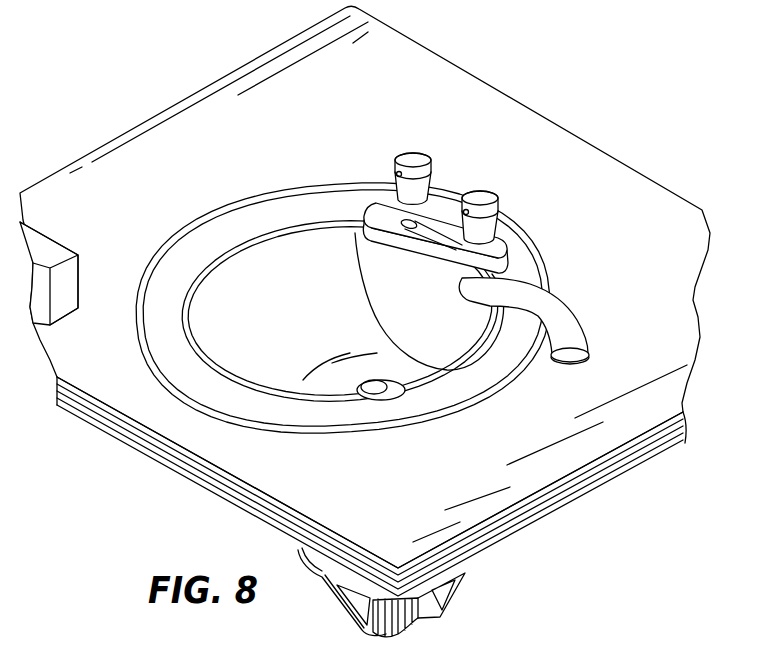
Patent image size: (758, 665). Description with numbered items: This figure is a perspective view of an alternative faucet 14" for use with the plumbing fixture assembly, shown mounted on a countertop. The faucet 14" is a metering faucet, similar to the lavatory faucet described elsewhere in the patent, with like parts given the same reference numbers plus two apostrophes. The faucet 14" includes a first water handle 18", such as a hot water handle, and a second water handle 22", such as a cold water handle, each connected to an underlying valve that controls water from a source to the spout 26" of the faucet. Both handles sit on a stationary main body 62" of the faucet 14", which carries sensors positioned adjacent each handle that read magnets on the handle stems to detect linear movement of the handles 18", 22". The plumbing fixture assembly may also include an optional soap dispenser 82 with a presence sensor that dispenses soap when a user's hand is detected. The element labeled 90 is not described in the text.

The faucet 14 is at (464, 113).
The first water handle 18 is at (413, 147).
The second water handle 22 is at (486, 186).
The spout 26 is at (373, 207).
The main body 62 is at (497, 263).
The soap dispenser 82 is at (572, 331).
The mounting block 90 is at (50, 248).